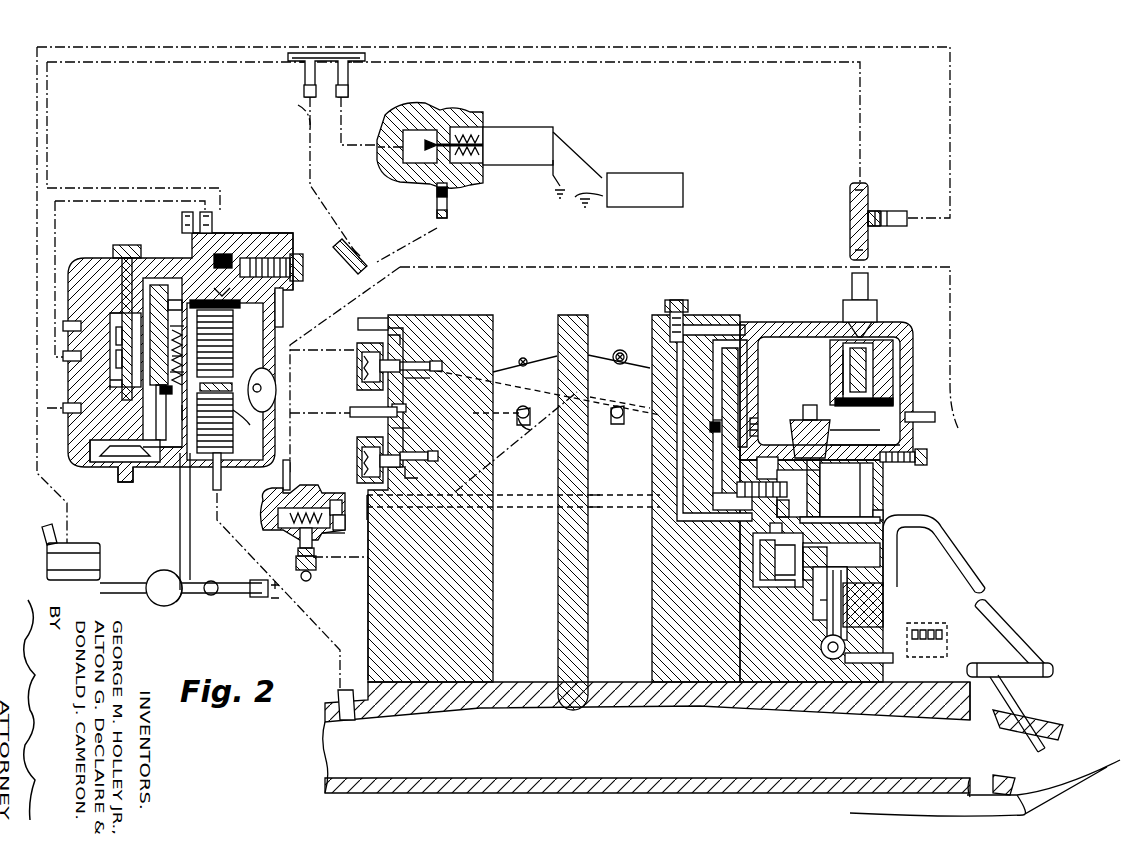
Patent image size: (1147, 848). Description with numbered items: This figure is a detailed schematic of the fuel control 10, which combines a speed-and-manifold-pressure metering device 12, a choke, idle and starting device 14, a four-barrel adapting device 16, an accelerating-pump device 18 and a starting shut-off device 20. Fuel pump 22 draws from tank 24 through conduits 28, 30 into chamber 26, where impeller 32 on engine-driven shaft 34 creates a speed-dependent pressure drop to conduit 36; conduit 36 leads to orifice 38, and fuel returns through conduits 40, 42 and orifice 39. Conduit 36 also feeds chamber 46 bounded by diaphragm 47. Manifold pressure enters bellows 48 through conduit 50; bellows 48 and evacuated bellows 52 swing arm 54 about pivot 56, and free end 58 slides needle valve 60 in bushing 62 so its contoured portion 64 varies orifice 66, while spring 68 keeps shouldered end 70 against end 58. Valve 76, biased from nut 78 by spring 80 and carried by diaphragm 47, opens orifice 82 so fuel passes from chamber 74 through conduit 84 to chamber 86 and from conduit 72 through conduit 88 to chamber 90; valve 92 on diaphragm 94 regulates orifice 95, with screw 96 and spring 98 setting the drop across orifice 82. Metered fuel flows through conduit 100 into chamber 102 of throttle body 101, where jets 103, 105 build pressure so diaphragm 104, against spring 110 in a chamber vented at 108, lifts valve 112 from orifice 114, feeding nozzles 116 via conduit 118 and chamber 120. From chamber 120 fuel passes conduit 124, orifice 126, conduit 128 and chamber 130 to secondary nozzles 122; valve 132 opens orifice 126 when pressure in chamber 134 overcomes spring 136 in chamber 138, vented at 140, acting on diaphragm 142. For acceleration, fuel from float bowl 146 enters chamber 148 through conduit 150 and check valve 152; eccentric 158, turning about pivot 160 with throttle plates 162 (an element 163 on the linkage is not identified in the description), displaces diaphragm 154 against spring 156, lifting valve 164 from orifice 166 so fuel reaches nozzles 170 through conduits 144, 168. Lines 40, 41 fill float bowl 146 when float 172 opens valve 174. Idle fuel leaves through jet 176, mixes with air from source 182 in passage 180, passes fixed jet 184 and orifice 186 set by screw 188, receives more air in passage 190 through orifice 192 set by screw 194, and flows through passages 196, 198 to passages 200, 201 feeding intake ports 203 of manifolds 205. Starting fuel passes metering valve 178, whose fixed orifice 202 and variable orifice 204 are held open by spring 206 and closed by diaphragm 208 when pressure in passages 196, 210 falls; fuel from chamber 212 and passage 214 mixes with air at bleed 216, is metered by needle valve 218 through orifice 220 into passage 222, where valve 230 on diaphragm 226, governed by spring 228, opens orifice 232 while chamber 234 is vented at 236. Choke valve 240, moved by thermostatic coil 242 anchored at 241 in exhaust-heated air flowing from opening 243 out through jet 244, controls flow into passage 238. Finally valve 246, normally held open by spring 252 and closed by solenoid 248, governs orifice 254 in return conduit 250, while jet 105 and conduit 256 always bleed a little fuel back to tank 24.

The fuel control 10 is at (574, 315).
The fuel metering device 12 is at (268, 452).
The automatic choke, idle and starting device 14 is at (894, 615).
The four-barrel adapting device 16 is at (470, 315).
The accelerating pump device 18 is at (340, 532).
The starting fuel shut-off device 20 is at (513, 168).
The fuel pump 22 is at (165, 570).
The tank 24 is at (100, 556).
The chamber 26 is at (180, 478).
The conduit 28 is at (138, 583).
The conduit 30 is at (180, 511).
The centrifugal pump impeller 32 is at (168, 445).
The shaft 34 is at (116, 474).
The conduit 36 is at (92, 452).
The orifice 38 is at (90, 443).
The orifice 39 is at (878, 212).
The conduit 40 is at (68, 403).
The line 41 is at (868, 250).
The conduit 42 is at (62, 538).
The chamber 46 is at (155, 410).
The flexible diaphragm 47 is at (110, 388).
The bellows 48 is at (250, 420).
The conduit 50 is at (222, 480).
The evacuated bellows 52 is at (236, 345).
The arm 54 is at (200, 412).
The fixed pivot 56 is at (264, 377).
The free end 58 is at (182, 412).
The needle valve 60 is at (184, 372).
The bushing 62 is at (184, 342).
The concavely contoured portion 64 is at (184, 330).
The metering orifice 66 is at (174, 300).
The compression spring 68 is at (184, 356).
The spring-retaining shouldered end 70 is at (172, 390).
The conduit 72 is at (148, 285).
The chamber 74 is at (112, 380).
The valve 76 is at (122, 347).
The adjustable nut 78 is at (115, 248).
The compression spring 80 is at (117, 315).
The metering orifice 82 is at (157, 395).
The conduit 84 is at (86, 352).
The chamber 86 is at (258, 235).
The conduit 88 is at (86, 325).
The chamber 90 is at (190, 233).
The valve 92 is at (236, 306).
The flexible diaphragm 94 is at (224, 252).
The orifice 95 is at (218, 290).
The adjustment screw 96 is at (298, 256).
The spring 98 is at (286, 256).
The conduit 100 is at (283, 300).
The throttle body 101 is at (360, 609).
The chamber 102 is at (400, 338).
The jet 103 is at (448, 198).
The flexible diaphragm 104 is at (402, 392).
The jet 105 is at (348, 244).
The atmospheric vent 108 is at (357, 366).
The spring 110 is at (360, 385).
The valve 112 is at (430, 378).
The orifice 114 is at (415, 362).
The nozzles 116 is at (618, 425).
The conduit 118 is at (444, 364).
The chamber 120 is at (625, 410).
The secondary nozzles 122 is at (516, 420).
The conduit 124 is at (408, 408).
The orifice 126 is at (410, 450).
The conduit 128 is at (438, 462).
The chamber 130 is at (523, 407).
The valve 132 is at (418, 478).
The chamber 134 is at (410, 428).
The spring 136 is at (358, 442).
The chamber 138 is at (358, 437).
The atmospheric vent 140 is at (362, 460).
The diaphragm 142 is at (365, 413).
The conduit 144 is at (445, 520).
The float bowl 146 is at (788, 324).
The chamber 148 is at (268, 505).
The conduit 150 is at (958, 428).
The check valve 152 is at (286, 478).
The flexible diaphragm 154 is at (280, 520).
The spring 156 is at (298, 550).
The eccentric 158 is at (296, 568).
The pivot 160 is at (310, 578).
The primary throttle plates 162 is at (628, 370).
The rod 163 is at (542, 357).
The gravity operated valve 164 is at (343, 506).
The orifice 166 is at (345, 522).
The conduit 168 is at (600, 495).
The nozzles 170 is at (600, 507).
The float 172 is at (838, 375).
The valve 174 is at (855, 365).
The jet 176 is at (755, 435).
The metering valve 178 is at (832, 395).
The passage 180 is at (746, 322).
The air source 182 is at (690, 325).
The fixed jet 184 is at (722, 425).
The orifice 186 is at (737, 490).
The screw 188 is at (780, 498).
The passage 190 is at (684, 378).
The orifice 192 is at (686, 356).
The screw 194 is at (682, 297).
The passage 196 is at (835, 520).
The passage 198 is at (985, 605).
The passage 200 is at (1030, 668).
The passage 201 is at (1025, 700).
The fixed orifice 202 is at (793, 445).
The intake ports 203 is at (1055, 740).
The variable metering orifice 204 is at (830, 438).
The intake manifolds 205 is at (913, 700).
The spring 206 is at (806, 408).
The flexible diaphragm 208 is at (838, 448).
The passage 210 is at (812, 495).
The chamber 212 is at (768, 468).
The passage 214 is at (872, 452).
The atmospheric air bleed 216 is at (858, 470).
The adjustable needle valve 218 is at (928, 457).
The orifice 220 is at (866, 478).
The passage 222 is at (822, 612).
The flexible diaphragm 226 is at (770, 575).
The spring 228 is at (758, 555).
The valve 230 is at (818, 590).
The orifice 232 is at (812, 548).
The chamber 234 is at (778, 592).
The atmospheric vent 236 is at (775, 538).
The passage 238 is at (893, 570).
The choke valve 240 is at (827, 625).
The anchor 241 is at (825, 656).
The thermostatic coil spring 242 is at (822, 647).
The opening 243 is at (895, 660).
The fixed jet 244 is at (885, 605).
The valve 246 is at (455, 135).
The solenoid 248 is at (553, 130).
The return conduit 250 is at (448, 213).
The spring 252 is at (470, 135).
The orifice 254 is at (437, 108).
The conduit 256 is at (305, 90).